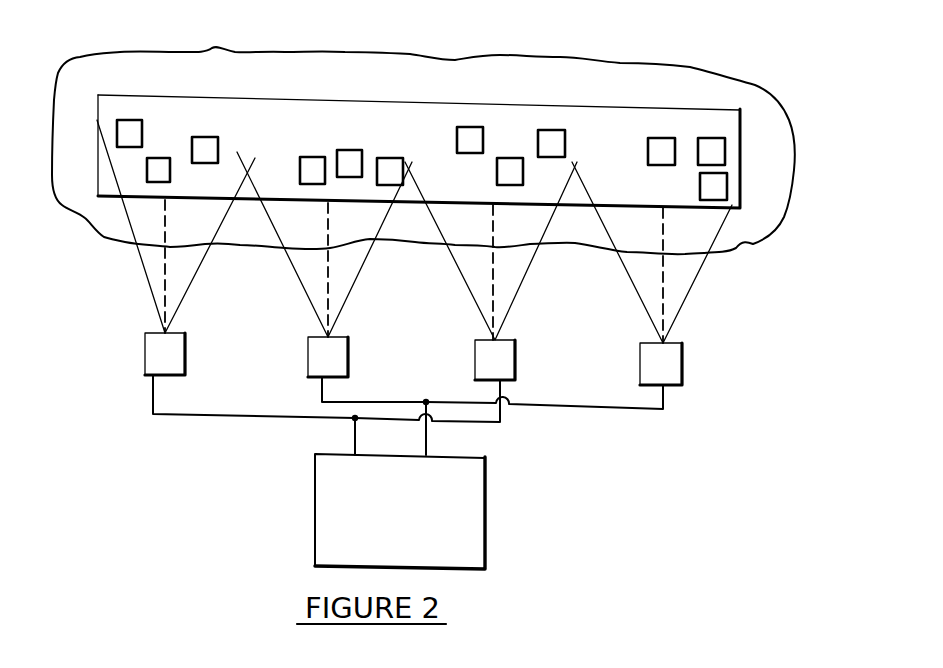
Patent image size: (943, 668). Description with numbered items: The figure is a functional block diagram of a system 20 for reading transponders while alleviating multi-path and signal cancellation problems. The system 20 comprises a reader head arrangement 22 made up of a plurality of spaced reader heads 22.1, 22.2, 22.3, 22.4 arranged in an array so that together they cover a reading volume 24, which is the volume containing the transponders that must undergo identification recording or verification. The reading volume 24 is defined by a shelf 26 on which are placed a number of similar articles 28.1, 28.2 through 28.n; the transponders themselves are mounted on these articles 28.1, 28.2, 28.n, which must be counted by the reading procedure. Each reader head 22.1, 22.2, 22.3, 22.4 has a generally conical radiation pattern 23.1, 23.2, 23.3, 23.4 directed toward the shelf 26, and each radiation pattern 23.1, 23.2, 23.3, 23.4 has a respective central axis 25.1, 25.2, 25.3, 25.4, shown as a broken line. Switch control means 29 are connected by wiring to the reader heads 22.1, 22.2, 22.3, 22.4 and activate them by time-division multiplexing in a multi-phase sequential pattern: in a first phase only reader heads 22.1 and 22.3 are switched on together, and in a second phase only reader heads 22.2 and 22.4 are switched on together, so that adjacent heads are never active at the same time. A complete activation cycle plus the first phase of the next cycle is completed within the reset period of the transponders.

The system 20 is at (650, 437).
The reader head arrangement 22 is at (753, 338).
The reader head 22.1 is at (147, 364).
The reader head 22.2 is at (320, 362).
The reader head 22.3 is at (476, 365).
The reader head 22.4 is at (648, 368).
The radiation pattern 23.1 is at (153, 280).
The radiation pattern 23.2 is at (315, 292).
The radiation pattern 23.3 is at (476, 290).
The radiation pattern 23.4 is at (650, 297).
The reading volume 24 is at (573, 56).
The central axis 25.1 is at (165, 266).
The central axis 25.2 is at (328, 258).
The central axis 25.3 is at (493, 260).
The central axis 25.4 is at (663, 280).
The shelf 26 is at (508, 117).
The article 28.1 is at (117, 132).
The article 28.2 is at (148, 178).
The article 28.n is at (716, 187).
The switch control means 29 is at (486, 527).